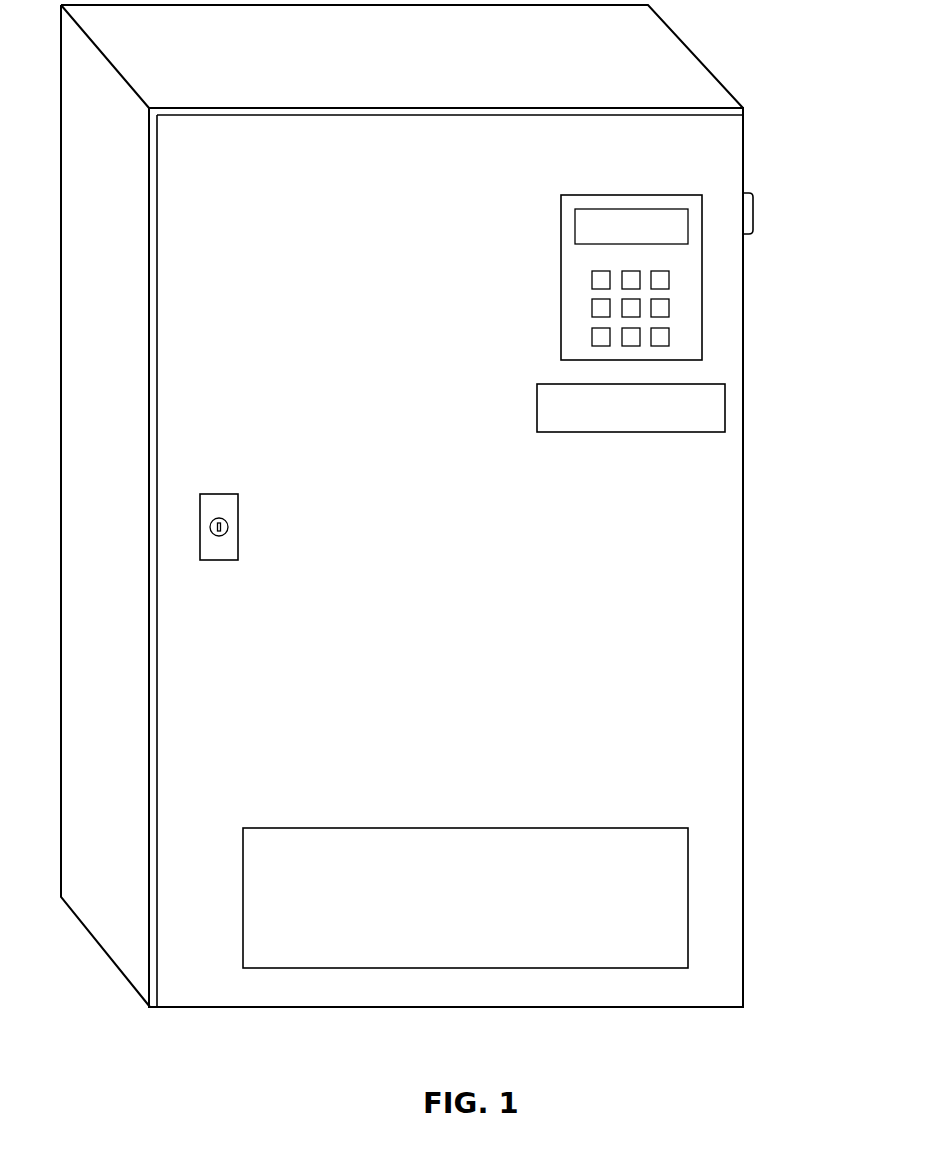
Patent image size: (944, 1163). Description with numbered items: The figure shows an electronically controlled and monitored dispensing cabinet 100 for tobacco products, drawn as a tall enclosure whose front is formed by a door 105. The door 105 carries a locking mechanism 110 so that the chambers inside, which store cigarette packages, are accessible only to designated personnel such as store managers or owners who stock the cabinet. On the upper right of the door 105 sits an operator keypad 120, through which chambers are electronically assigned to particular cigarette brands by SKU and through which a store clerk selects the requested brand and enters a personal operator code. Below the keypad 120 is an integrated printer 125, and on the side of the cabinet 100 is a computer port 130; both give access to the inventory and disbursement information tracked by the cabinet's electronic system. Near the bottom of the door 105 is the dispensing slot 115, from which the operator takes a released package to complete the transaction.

The dispensing cabinet 100 is at (682, 58).
The door 105 is at (170, 235).
The locking mechanism 110 is at (209, 527).
The dispensing slot 115 is at (660, 907).
The operator keypad 120 is at (683, 298).
The integrated printer 125 is at (705, 410).
The computer port 130 is at (753, 215).